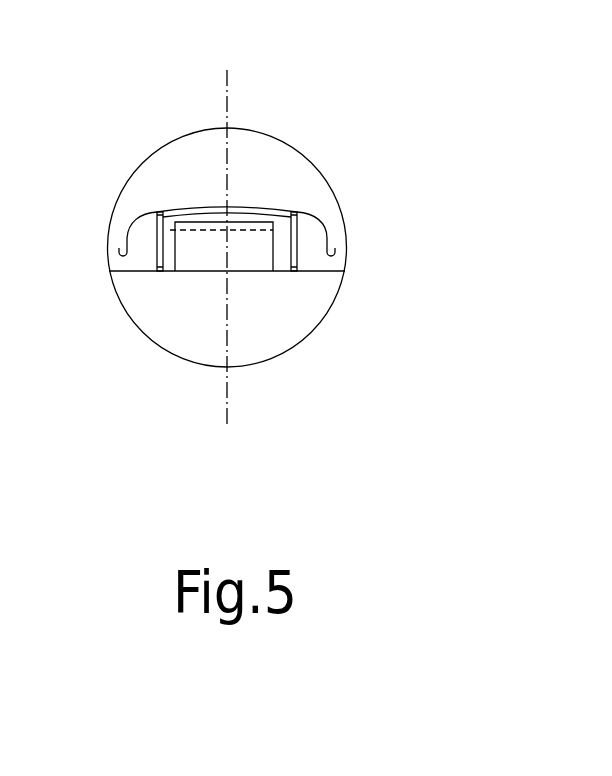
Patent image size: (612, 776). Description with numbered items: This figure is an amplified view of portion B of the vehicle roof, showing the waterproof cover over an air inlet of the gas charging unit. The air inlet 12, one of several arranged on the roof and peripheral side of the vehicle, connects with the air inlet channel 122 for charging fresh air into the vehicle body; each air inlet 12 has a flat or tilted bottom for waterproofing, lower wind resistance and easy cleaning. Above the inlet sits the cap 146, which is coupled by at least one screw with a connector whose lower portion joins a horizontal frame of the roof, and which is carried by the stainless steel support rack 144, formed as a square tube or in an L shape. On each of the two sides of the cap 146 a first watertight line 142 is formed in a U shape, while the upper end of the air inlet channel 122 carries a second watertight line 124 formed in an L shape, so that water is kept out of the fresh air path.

The portion B is at (255, 130).
The air inlet 12 is at (197, 250).
The air inlet channel 122 is at (182, 218).
The second watertight line 124 is at (272, 229).
The first watertight line 142 is at (122, 248).
The support rack 144 is at (297, 245).
The cap 146 is at (262, 213).